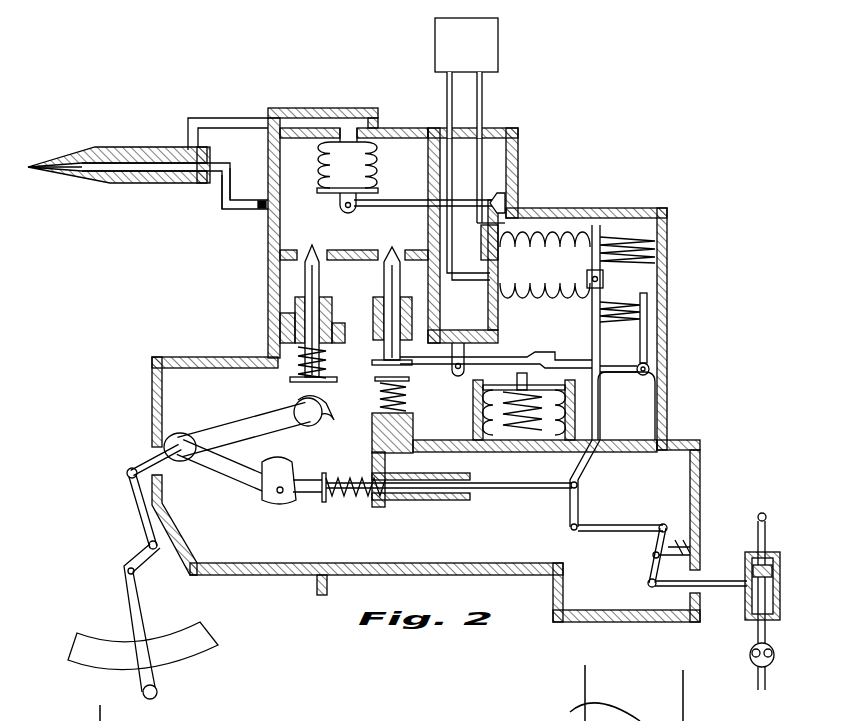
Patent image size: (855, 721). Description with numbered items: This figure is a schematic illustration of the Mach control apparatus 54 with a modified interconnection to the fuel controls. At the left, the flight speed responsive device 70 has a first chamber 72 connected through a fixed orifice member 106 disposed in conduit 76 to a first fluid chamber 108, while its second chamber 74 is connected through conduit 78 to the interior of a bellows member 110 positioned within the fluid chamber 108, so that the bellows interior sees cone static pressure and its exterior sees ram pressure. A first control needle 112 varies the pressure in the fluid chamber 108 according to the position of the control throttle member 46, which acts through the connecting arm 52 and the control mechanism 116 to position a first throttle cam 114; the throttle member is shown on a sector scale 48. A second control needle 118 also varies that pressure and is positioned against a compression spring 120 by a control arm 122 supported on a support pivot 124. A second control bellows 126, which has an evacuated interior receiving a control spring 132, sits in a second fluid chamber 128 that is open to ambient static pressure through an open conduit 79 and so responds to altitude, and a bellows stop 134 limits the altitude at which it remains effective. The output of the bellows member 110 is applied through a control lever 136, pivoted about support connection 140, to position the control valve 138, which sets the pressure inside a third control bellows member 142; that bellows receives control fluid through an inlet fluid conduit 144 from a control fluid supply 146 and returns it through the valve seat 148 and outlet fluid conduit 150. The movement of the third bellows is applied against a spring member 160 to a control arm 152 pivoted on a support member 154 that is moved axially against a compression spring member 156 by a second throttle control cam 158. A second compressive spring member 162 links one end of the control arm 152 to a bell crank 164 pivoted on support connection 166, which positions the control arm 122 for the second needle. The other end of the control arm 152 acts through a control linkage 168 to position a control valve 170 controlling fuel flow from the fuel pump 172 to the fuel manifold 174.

The control throttle member 46 is at (157, 690).
The sector scale 48 is at (160, 650).
The connecting arm 52 is at (140, 512).
The Mach control apparatus 54 is at (153, 378).
The flight speed responsive device 70 is at (173, 128).
The first chamber 72 is at (133, 165).
The second chamber 74 is at (182, 172).
The conduit 76 is at (222, 202).
The conduit 78 is at (222, 123).
The open conduit 79 is at (323, 597).
The fixed orifice member 106 is at (258, 207).
The first fluid chamber 108 is at (290, 228).
The bellows member 110 is at (378, 163).
The first control needle 112 is at (305, 265).
The first throttle cam 114 is at (330, 400).
The control mechanism 116 is at (178, 438).
The second control needle 118 is at (385, 277).
The compression spring 120 is at (400, 393).
The control arm 122 is at (487, 363).
The support pivot 124 is at (457, 373).
The second control bellows 126 is at (557, 420).
The second fluid chamber 128 is at (478, 544).
The control spring 132 is at (517, 445).
The bellows stop 134 is at (570, 380).
The control lever 136 is at (370, 207).
The control valve 138 is at (507, 193).
The support connection 140 is at (422, 200).
The third control bellows member 142 is at (557, 294).
The inlet fluid conduit 144 is at (448, 88).
The control fluid supply 146 is at (500, 47).
The valve seat 148 is at (480, 220).
The outlet fluid conduit 150 is at (482, 107).
The control arm 152 is at (595, 335).
The support member 154 is at (528, 488).
The compression spring member 156 is at (338, 497).
The second throttle control cam 158 is at (282, 503).
The spring member 160 is at (628, 237).
The second compressive spring member 162 is at (622, 303).
The bell crank 164 is at (643, 328).
The support connection 166 is at (650, 370).
The control linkage 168 is at (648, 530).
The control valve 170 is at (747, 583).
The fuel pump 172 is at (770, 665).
The fuel manifold 174 is at (762, 515).